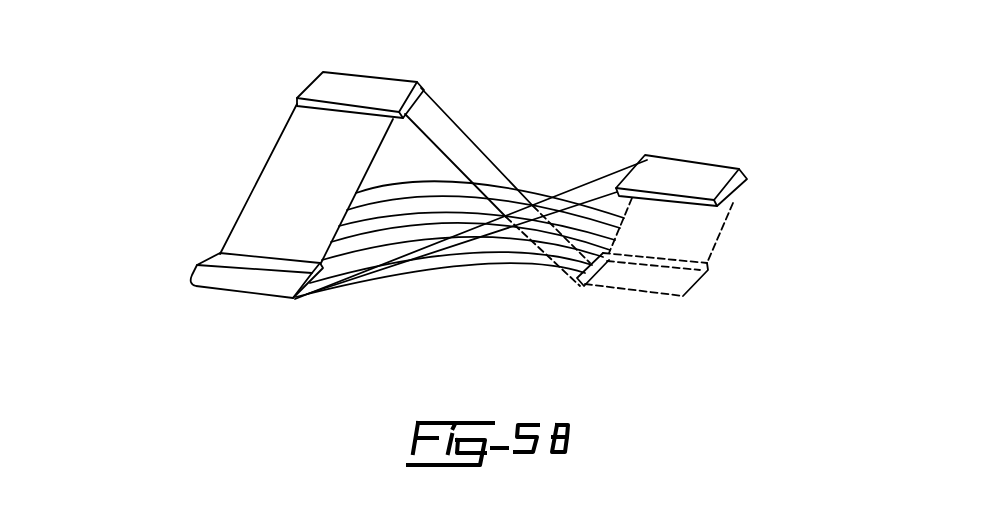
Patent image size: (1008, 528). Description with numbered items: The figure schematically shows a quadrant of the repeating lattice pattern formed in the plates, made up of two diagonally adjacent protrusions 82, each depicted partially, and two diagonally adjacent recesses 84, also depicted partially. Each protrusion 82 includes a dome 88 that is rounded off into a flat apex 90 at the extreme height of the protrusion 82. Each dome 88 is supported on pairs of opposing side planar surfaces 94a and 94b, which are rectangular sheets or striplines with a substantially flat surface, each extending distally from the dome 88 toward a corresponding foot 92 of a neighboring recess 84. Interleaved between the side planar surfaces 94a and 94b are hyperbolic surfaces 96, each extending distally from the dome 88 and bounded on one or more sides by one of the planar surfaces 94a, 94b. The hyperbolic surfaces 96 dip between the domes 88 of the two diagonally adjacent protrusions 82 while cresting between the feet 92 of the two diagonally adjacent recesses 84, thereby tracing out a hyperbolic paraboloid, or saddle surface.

The protrusion 82 is at (240, 65).
The recess 84 is at (183, 233).
The dome 88 is at (313, 63).
The flat apex 90 is at (325, 90).
The foot 92 is at (250, 279).
The side planar surface 94a is at (472, 150).
The side planar surface 94b is at (280, 167).
The hyperbolic surface 96 is at (415, 203).